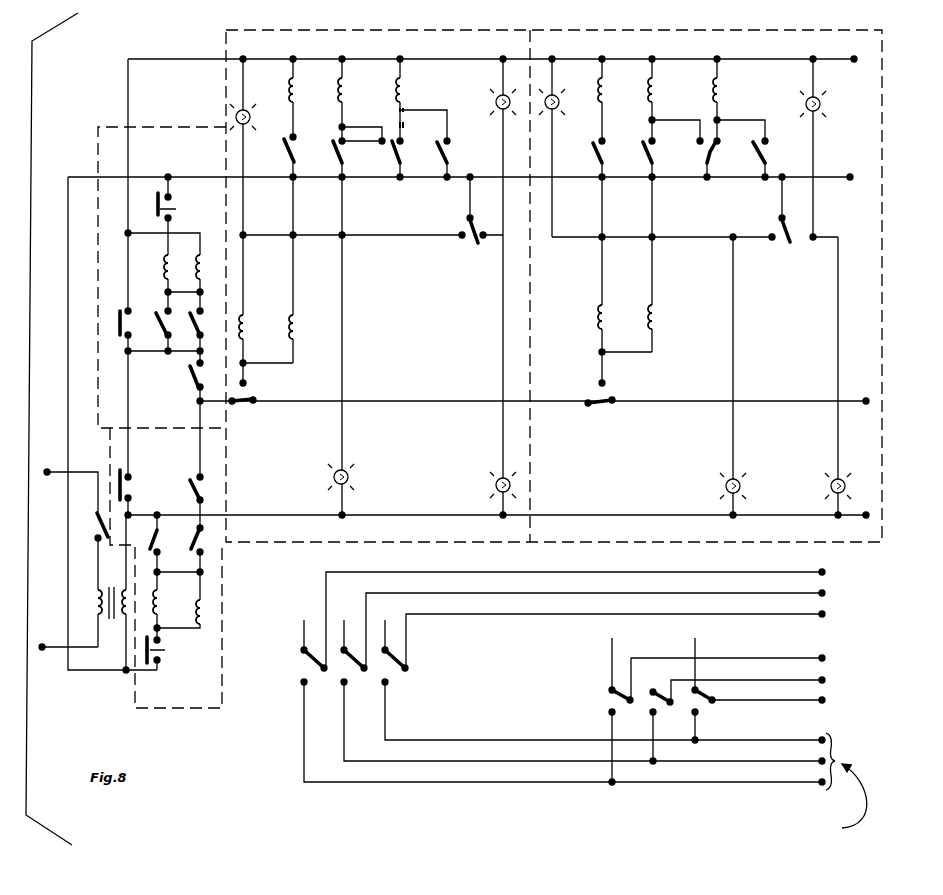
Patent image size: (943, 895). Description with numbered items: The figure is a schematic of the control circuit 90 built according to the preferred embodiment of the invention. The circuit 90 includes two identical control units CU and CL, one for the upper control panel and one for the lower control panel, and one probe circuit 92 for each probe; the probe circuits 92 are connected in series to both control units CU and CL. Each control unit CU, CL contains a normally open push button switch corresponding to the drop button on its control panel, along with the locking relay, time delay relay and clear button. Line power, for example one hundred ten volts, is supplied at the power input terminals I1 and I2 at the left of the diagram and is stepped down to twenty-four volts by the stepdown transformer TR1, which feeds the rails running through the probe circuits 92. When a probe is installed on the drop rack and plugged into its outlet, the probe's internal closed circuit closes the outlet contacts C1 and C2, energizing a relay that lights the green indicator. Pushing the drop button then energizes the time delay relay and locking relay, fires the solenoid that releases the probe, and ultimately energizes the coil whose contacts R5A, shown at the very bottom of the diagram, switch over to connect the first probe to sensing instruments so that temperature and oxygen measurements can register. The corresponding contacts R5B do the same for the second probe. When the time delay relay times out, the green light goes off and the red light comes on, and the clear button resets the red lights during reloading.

The control circuit 90 is at (104, 106).
The probe circuit 92 is at (463, 10).
The upper control unit CU is at (98, 328).
The lower control unit CL is at (176, 711).
The stepdown transformer TR1 is at (99, 592).
The power input terminal I1 is at (65, 490).
The power input terminal I2 is at (65, 657).
The outlet contact C1 is at (410, 127).
The outlet contact C2 is at (410, 114).
The relay contacts R5A is at (411, 645).
The relay contacts R5B is at (600, 675).